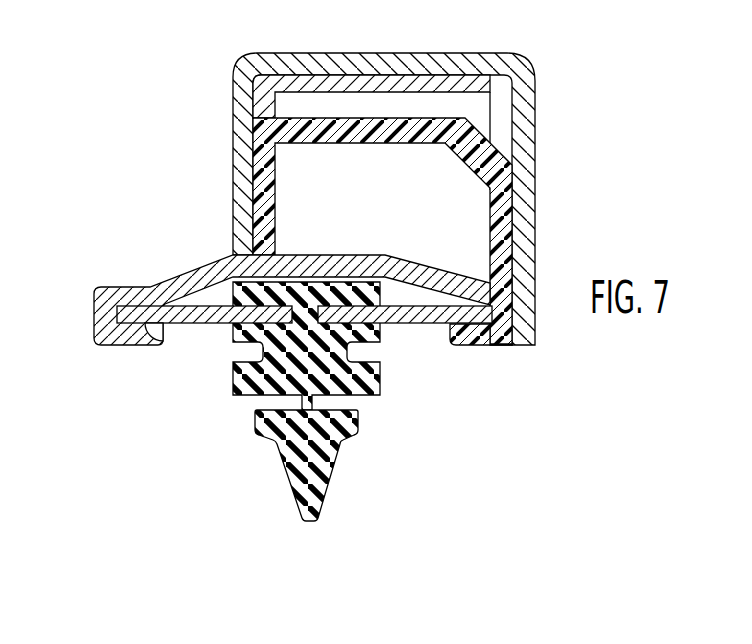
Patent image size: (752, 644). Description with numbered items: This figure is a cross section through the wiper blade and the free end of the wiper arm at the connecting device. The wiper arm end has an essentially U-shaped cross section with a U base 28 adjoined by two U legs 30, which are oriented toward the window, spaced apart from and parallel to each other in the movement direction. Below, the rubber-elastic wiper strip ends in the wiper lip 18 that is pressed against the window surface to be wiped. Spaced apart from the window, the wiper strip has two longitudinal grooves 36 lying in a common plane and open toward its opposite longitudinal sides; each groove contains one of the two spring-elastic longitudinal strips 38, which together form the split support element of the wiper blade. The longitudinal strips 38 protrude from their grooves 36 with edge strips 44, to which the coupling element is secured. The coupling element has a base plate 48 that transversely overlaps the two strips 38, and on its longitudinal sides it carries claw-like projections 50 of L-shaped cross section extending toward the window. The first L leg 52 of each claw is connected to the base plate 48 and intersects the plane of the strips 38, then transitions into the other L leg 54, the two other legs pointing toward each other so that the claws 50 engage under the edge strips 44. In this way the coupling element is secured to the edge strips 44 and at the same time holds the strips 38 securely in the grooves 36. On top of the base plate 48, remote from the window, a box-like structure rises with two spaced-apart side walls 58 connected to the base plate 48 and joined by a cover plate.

The wiper lip 18 is at (315, 477).
The U base 28 is at (448, 63).
The U legs 30 is at (240, 98).
The longitudinal grooves 36 is at (285, 308).
The longitudinal strips 38 is at (188, 330).
The edge strips 44 is at (166, 300).
The base plate 48 is at (218, 272).
The claw-like projections 50 is at (95, 347).
The first L leg 52 is at (98, 304).
The other L leg 54 is at (137, 338).
The side walls 58 is at (256, 164).